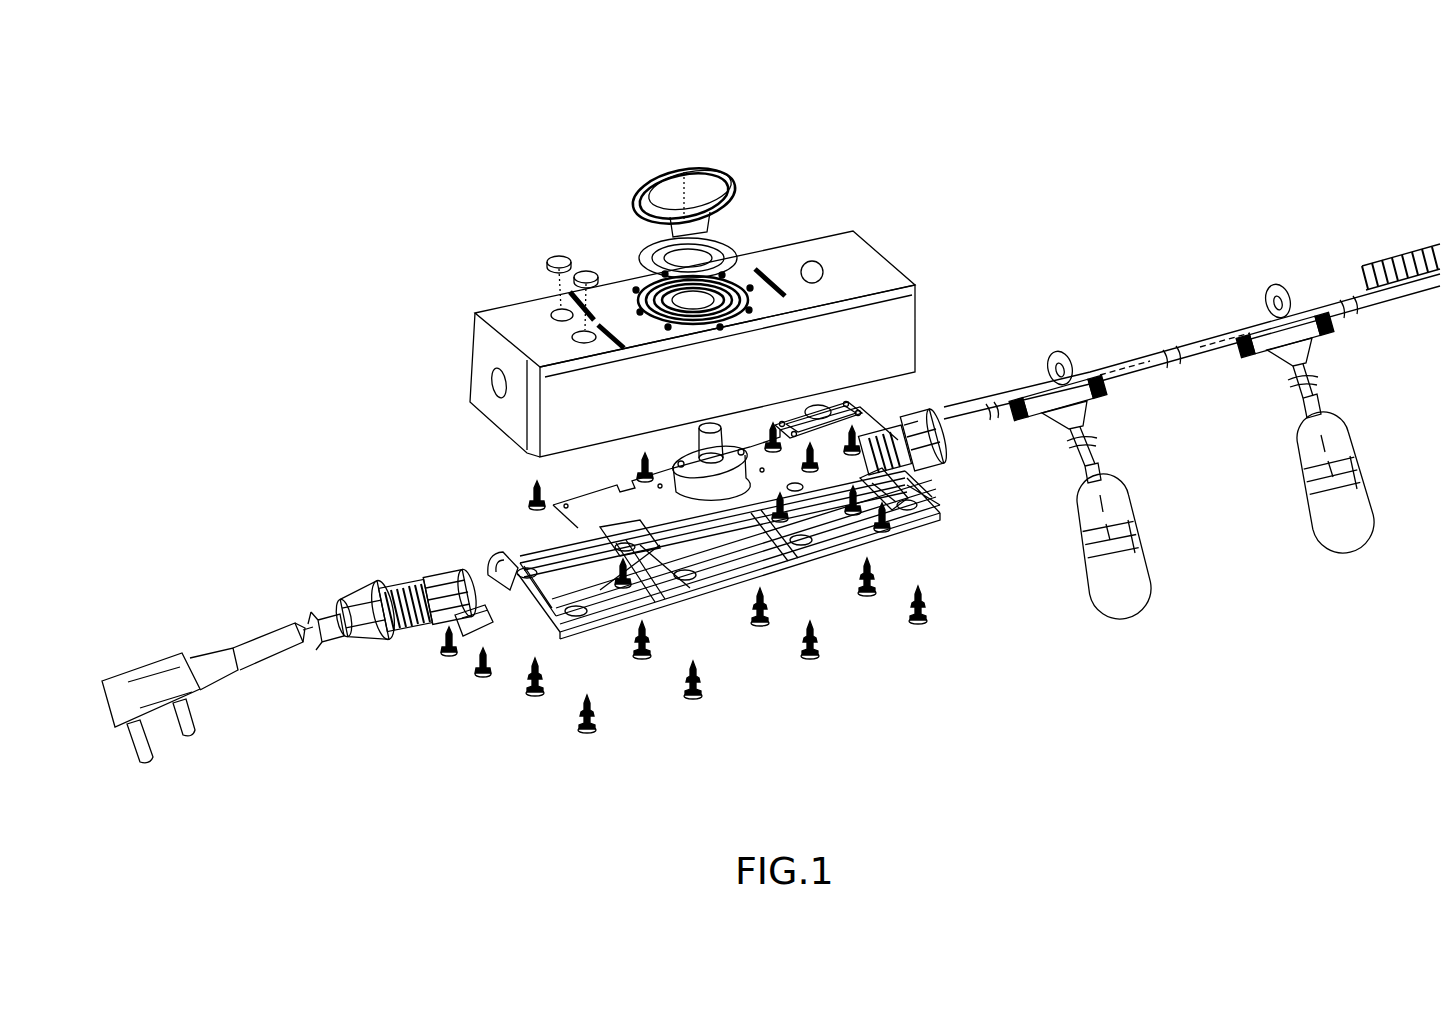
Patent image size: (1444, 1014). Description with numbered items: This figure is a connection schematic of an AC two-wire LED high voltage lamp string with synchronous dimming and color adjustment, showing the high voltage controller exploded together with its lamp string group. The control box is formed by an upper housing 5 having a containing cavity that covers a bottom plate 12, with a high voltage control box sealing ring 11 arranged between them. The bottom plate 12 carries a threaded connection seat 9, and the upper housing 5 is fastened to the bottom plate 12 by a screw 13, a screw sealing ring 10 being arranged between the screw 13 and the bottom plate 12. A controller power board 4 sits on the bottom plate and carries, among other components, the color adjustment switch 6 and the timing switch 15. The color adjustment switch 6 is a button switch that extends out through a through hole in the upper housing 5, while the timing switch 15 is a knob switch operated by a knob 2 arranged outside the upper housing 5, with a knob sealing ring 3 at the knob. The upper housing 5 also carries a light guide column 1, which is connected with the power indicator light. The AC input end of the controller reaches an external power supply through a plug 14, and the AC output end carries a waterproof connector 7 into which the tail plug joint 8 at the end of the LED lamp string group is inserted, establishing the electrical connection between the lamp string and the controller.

The light guide column 1 is at (555, 255).
The knob 2 is at (668, 170).
The knob sealing ring 3 is at (723, 242).
The controller power board 4 is at (718, 510).
The upper housing 5 is at (848, 250).
The color adjustment switch 6 is at (822, 405).
The connector 7 is at (926, 418).
The tail plug joint 8 is at (985, 422).
The threaded connection seat 9 is at (876, 480).
The screw sealing ring 10 is at (928, 598).
The high voltage control box sealing ring 11 is at (632, 527).
The bottom plate 12 is at (567, 636).
The screw 13 is at (520, 548).
The plug 14 is at (170, 670).
The timing switch 15 is at (697, 475).